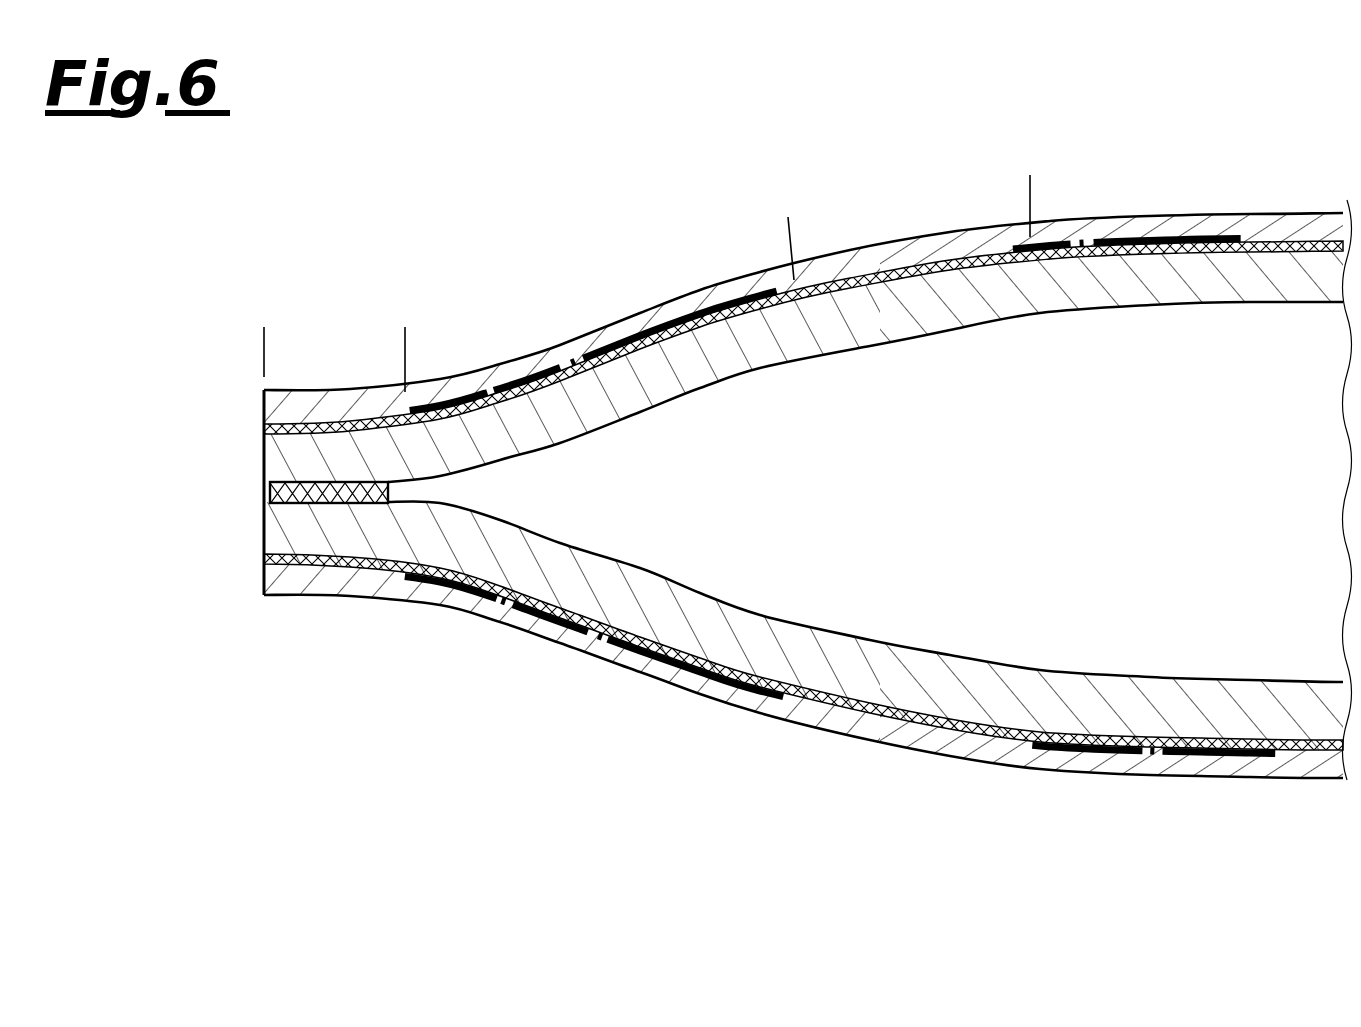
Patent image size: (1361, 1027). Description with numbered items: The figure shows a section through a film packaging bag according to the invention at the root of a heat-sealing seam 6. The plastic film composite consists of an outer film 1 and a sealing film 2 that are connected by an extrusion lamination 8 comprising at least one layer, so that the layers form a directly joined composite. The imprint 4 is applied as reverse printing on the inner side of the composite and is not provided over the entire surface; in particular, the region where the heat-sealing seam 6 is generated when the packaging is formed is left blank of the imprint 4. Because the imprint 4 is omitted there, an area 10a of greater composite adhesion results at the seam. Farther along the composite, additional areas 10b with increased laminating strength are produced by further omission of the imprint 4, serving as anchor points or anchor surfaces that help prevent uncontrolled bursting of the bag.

The outer film 1 is at (283, 407).
The sealing film 2 is at (280, 458).
The imprint 4 is at (1181, 212).
The heat-sealing seam 6 is at (270, 490).
The extrusion lamination 8 is at (570, 610).
The area of greater composite adhesion 10a is at (405, 317).
The additional area with increased laminating strength 10b is at (1023, 168).